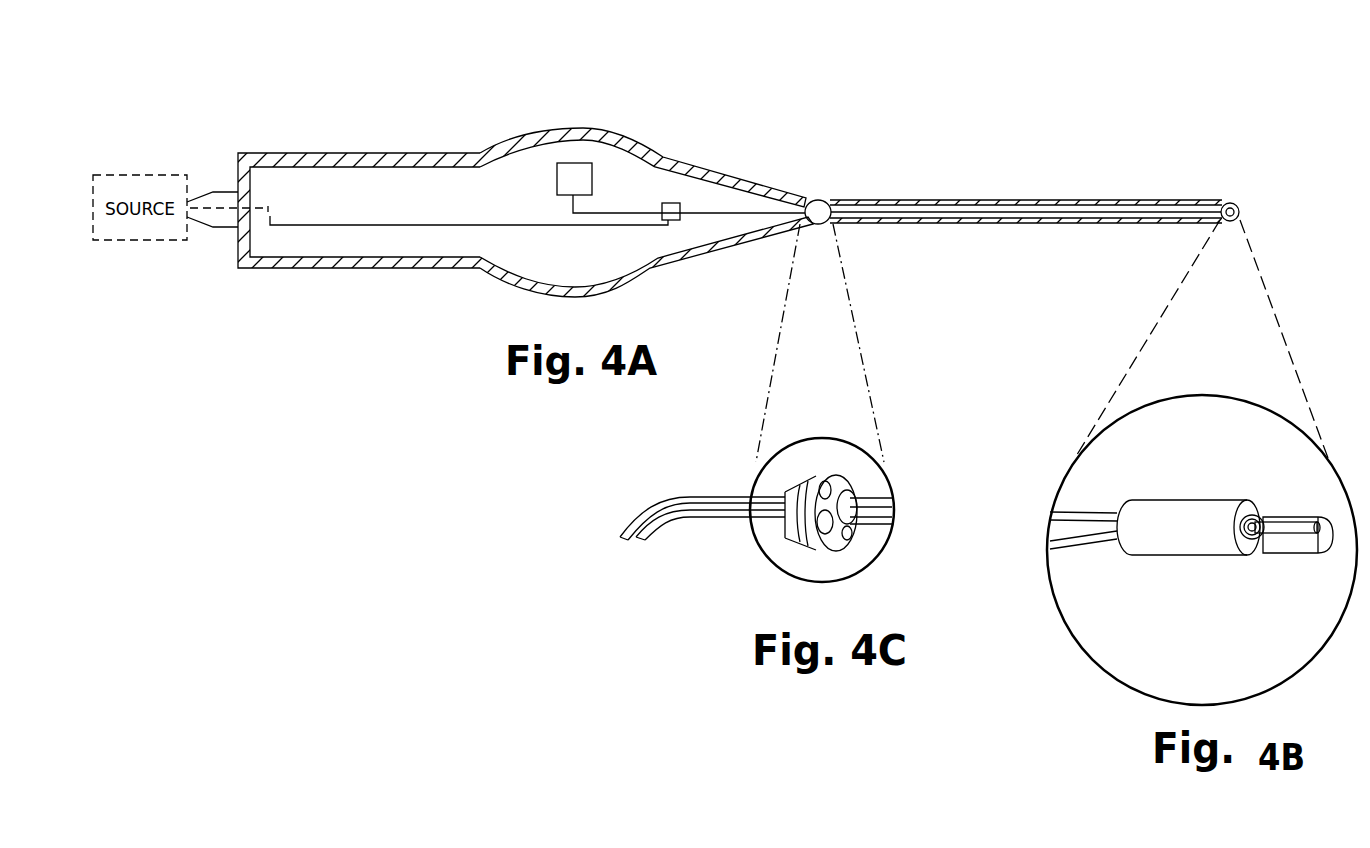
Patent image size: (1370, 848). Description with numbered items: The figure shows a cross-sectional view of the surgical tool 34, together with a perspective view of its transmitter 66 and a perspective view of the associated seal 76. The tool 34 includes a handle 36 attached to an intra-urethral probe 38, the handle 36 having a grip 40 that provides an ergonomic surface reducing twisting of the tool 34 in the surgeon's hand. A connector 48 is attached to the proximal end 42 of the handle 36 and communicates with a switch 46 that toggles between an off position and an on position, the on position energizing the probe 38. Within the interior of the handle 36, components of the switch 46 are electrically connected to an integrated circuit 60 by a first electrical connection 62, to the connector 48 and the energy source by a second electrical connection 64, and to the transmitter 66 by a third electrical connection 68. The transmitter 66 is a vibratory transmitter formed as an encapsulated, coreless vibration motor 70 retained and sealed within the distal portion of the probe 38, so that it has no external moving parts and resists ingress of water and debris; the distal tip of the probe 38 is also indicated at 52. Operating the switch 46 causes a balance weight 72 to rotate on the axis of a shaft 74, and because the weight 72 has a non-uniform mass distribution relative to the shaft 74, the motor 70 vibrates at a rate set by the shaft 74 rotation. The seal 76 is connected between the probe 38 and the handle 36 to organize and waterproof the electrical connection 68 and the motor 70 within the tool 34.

In FIG. 4A, the surgical tool 34 is at (708, 60).
In FIG. 4A, the handle 36 is at (340, 153).
In FIG. 4A, the intra-urethral probe 38 is at (920, 200).
In FIG. 4A, the grip 40 is at (588, 128).
In FIG. 4A, the proximal end 42 is at (238, 165).
In FIG. 4A, the switch 46 is at (671, 203).
In FIG. 4A, the connector 48 is at (215, 230).
In FIG. 4A, the distal tip 52 is at (1240, 210).
In FIG. 4A, the integrated circuit 60 is at (567, 173).
In FIG. 4A, the first electrical connection 62 is at (620, 211).
In FIG. 4A, the second electrical connection 64 is at (430, 225).
In FIG. 4A, the transmitter 66 is at (1230, 203).
In FIG. 4A, the third electrical connection 68 is at (1035, 212).
In FIG. 4C, the third electrical connection 68 is at (650, 486).
In FIG. 4B, the third electrical connection 68 is at (1085, 498).
In FIG. 4B, the vibration motor 70 is at (1180, 545).
In FIG. 4B, the balance weight 72 is at (1292, 545).
In FIG. 4B, the shaft 74 is at (1285, 524).
In FIG. 4C, the seal 76 is at (820, 548).